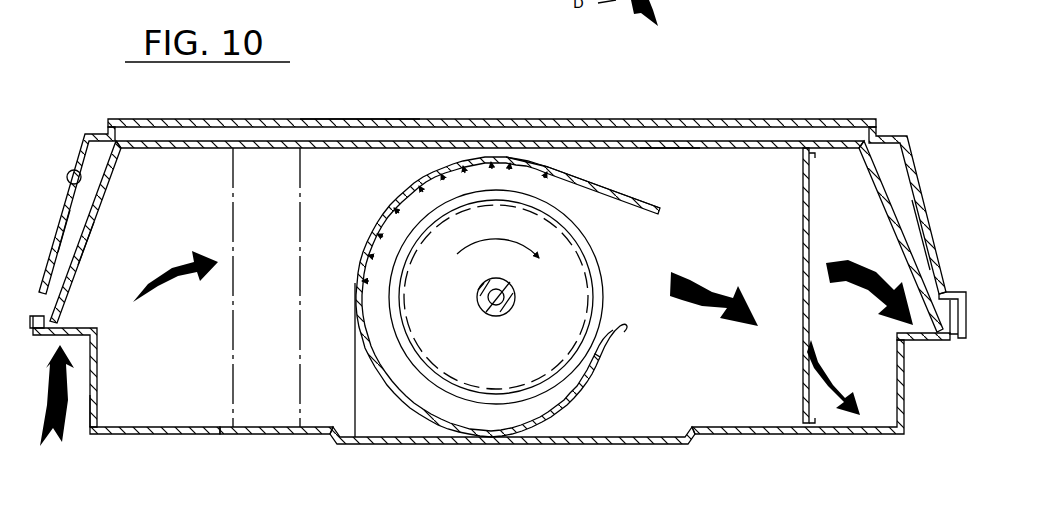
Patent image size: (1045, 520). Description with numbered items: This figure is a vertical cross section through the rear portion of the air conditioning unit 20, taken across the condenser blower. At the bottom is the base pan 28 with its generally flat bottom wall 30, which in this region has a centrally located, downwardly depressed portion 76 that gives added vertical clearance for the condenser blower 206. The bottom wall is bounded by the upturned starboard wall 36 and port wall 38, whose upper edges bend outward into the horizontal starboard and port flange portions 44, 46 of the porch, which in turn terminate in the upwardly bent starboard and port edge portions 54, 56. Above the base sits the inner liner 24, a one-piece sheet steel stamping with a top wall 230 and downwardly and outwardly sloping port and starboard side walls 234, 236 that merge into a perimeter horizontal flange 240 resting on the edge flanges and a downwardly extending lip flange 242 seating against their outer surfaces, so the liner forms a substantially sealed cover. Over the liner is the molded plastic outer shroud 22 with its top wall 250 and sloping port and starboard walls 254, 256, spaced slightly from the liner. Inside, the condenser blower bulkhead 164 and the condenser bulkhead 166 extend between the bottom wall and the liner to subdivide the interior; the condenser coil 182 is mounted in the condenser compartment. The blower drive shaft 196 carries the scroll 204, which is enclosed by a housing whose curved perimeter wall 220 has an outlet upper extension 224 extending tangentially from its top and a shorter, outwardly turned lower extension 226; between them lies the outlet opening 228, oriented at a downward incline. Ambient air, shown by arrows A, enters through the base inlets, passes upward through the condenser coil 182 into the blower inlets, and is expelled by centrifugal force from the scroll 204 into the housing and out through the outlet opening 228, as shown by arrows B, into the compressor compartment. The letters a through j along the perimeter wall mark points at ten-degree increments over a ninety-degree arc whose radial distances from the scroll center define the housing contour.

The air conditioning unit 20 is at (347, 103).
The outer shroud 22 is at (82, 146).
The inner liner 24 is at (109, 202).
The base pan 28 is at (179, 440).
The bottom wall 30 is at (262, 441).
The starboard wall 36 is at (90, 402).
The port wall 38 is at (903, 393).
The starboard flange portion 44 is at (90, 341).
The port flange portion 46 is at (950, 341).
The starboard edge portion 54 is at (56, 324).
The port edge portion 56 is at (940, 334).
The depressed portion 76 is at (364, 444).
The condenser blower bulkhead 164 is at (668, 168).
The condenser bulkhead 166 is at (803, 183).
The condenser coil 182 is at (230, 298).
The blower drive shaft 196 is at (493, 313).
The scroll 204 is at (403, 322).
The condenser blower 206 is at (486, 447).
The perimeter wall 220 is at (561, 157).
The outlet upper extension 224 is at (646, 194).
The lower extension 226 is at (623, 329).
The outlet opening 228 is at (636, 241).
The top wall 230 is at (357, 150).
The port side wall 234 is at (888, 212).
The starboard side wall 236 is at (94, 228).
The perimeter horizontal flange 240 is at (67, 287).
The lip flange 242 is at (932, 279).
The top wall 250 is at (446, 118).
The port wall 254 is at (916, 156).
The starboard wall 256 is at (82, 181).
The air flow arrows A is at (66, 393).
The air flow arrows B is at (713, 281).